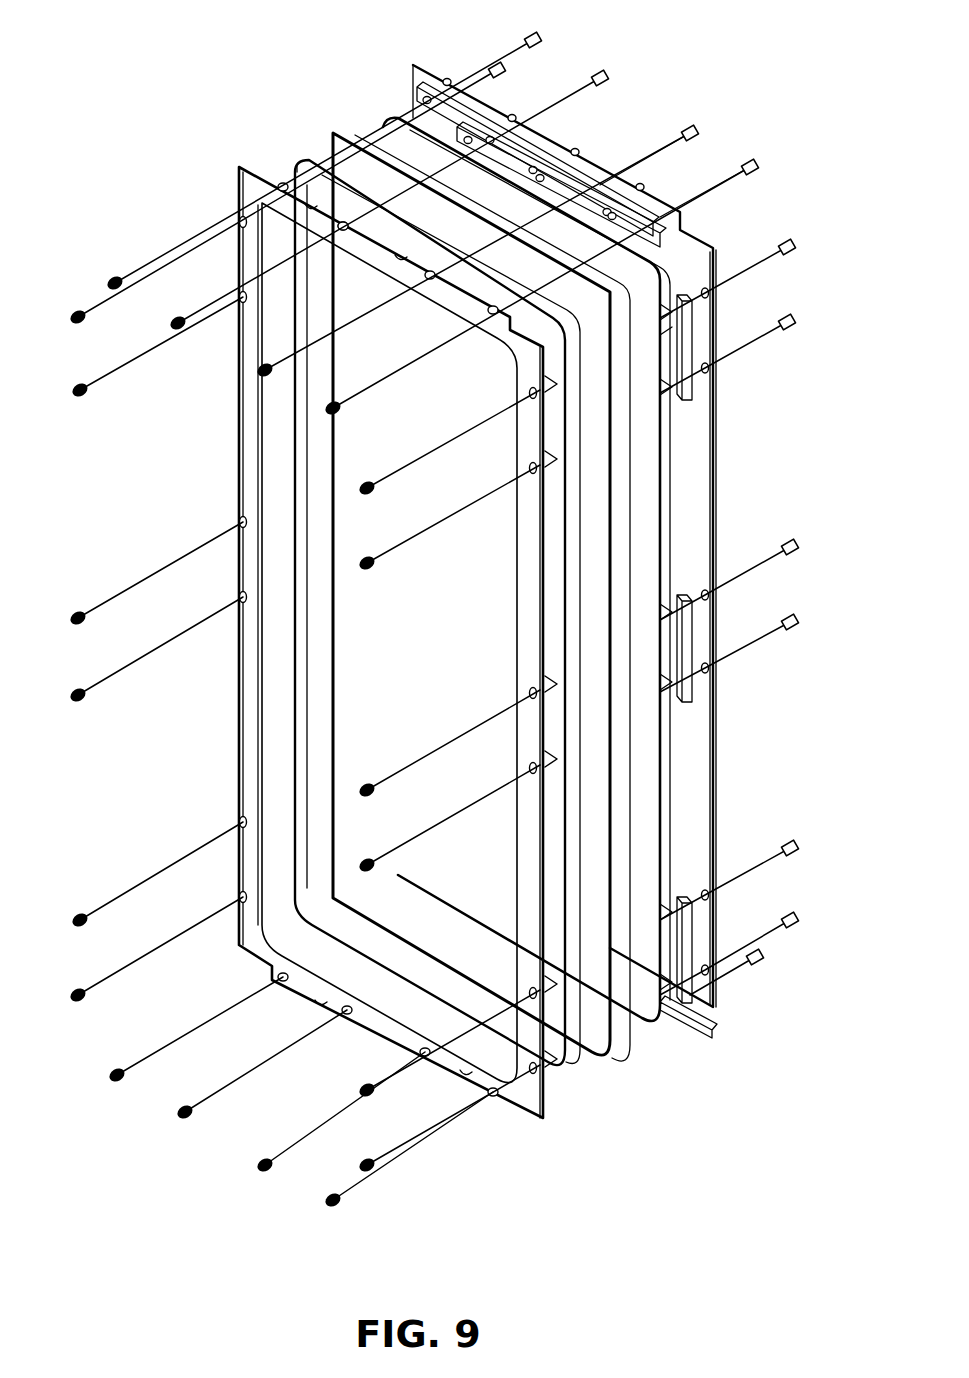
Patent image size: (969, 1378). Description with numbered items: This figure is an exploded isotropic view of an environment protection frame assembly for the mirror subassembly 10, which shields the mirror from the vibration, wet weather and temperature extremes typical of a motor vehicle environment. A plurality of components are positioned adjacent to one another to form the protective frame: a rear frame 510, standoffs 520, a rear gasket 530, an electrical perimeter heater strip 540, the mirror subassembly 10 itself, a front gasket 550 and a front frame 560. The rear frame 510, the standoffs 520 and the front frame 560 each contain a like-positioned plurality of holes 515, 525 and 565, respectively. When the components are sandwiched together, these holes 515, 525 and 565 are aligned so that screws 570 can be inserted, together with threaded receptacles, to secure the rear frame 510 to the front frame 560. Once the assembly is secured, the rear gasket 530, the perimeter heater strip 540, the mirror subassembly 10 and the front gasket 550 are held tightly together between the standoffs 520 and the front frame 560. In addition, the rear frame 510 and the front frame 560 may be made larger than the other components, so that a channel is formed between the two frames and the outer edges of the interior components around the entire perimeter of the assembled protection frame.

The mirror subassembly 10 is at (303, 160).
The rear frame 510 is at (443, 80).
The holes 515 is at (575, 140).
The standoffs 520 is at (415, 100).
The holes 525 is at (600, 187).
The rear gasket 530 is at (389, 117).
The electrical perimeter heater strip 540 is at (357, 133).
The front gasket 550 is at (305, 166).
The front frame 560 is at (240, 172).
The holes 565 is at (347, 232).
The screws 570 is at (110, 283).